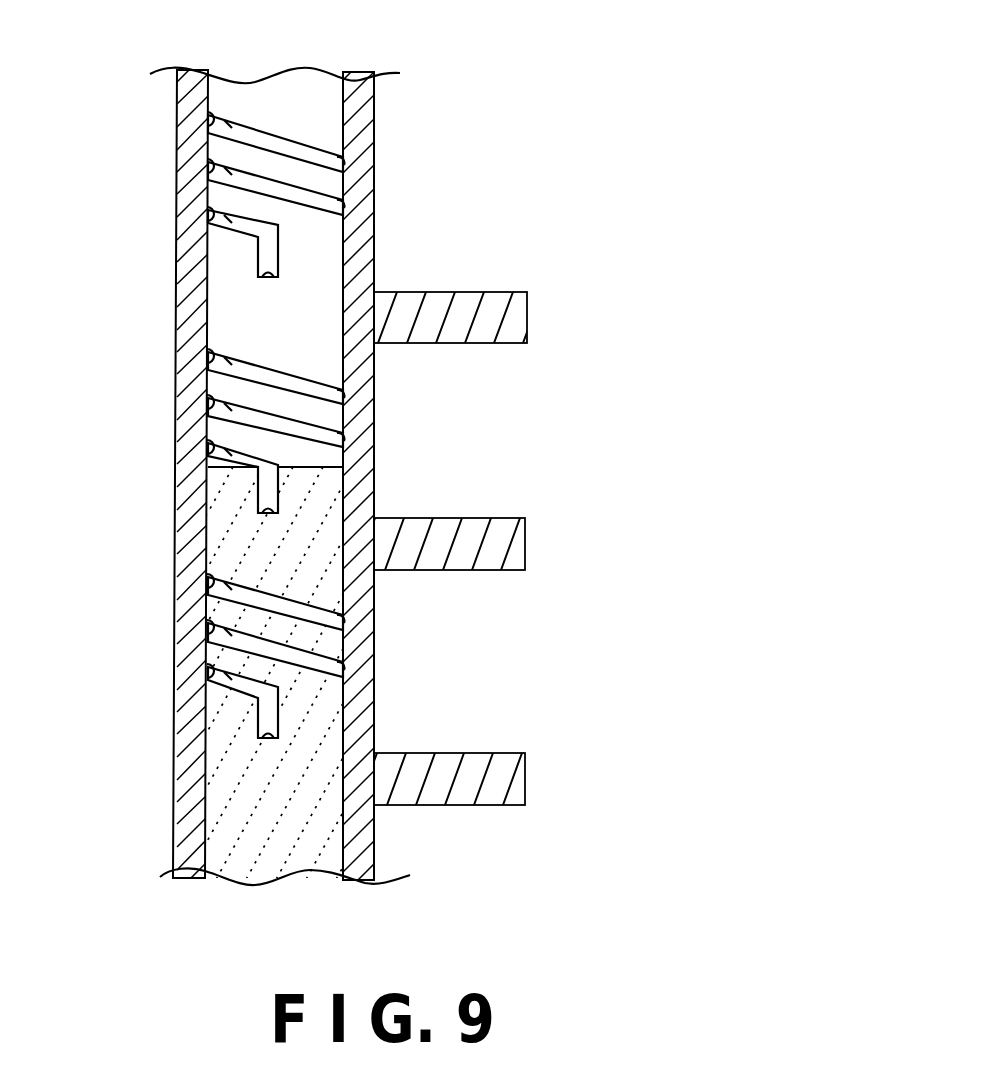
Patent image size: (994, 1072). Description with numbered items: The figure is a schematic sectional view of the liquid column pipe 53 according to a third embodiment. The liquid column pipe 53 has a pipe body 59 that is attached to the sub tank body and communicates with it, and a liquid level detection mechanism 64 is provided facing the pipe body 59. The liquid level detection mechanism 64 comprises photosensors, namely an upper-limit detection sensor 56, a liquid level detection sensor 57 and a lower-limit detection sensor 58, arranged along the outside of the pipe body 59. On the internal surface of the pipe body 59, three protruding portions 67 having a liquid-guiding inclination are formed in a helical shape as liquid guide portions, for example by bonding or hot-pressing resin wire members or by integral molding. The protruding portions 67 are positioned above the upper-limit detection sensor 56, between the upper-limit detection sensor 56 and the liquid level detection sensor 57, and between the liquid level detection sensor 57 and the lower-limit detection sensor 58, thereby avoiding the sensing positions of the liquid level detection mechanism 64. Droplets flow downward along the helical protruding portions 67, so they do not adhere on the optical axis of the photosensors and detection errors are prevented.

The liquid column pipe 53 is at (532, 176).
The upper-limit detection sensor 56 is at (528, 323).
The liquid level detection sensor 57 is at (525, 543).
The lower-limit detection sensor 58 is at (525, 775).
The pipe body 59 is at (375, 184).
The liquid level detection mechanism 64 is at (735, 503).
The protruding portions 67 is at (207, 212).